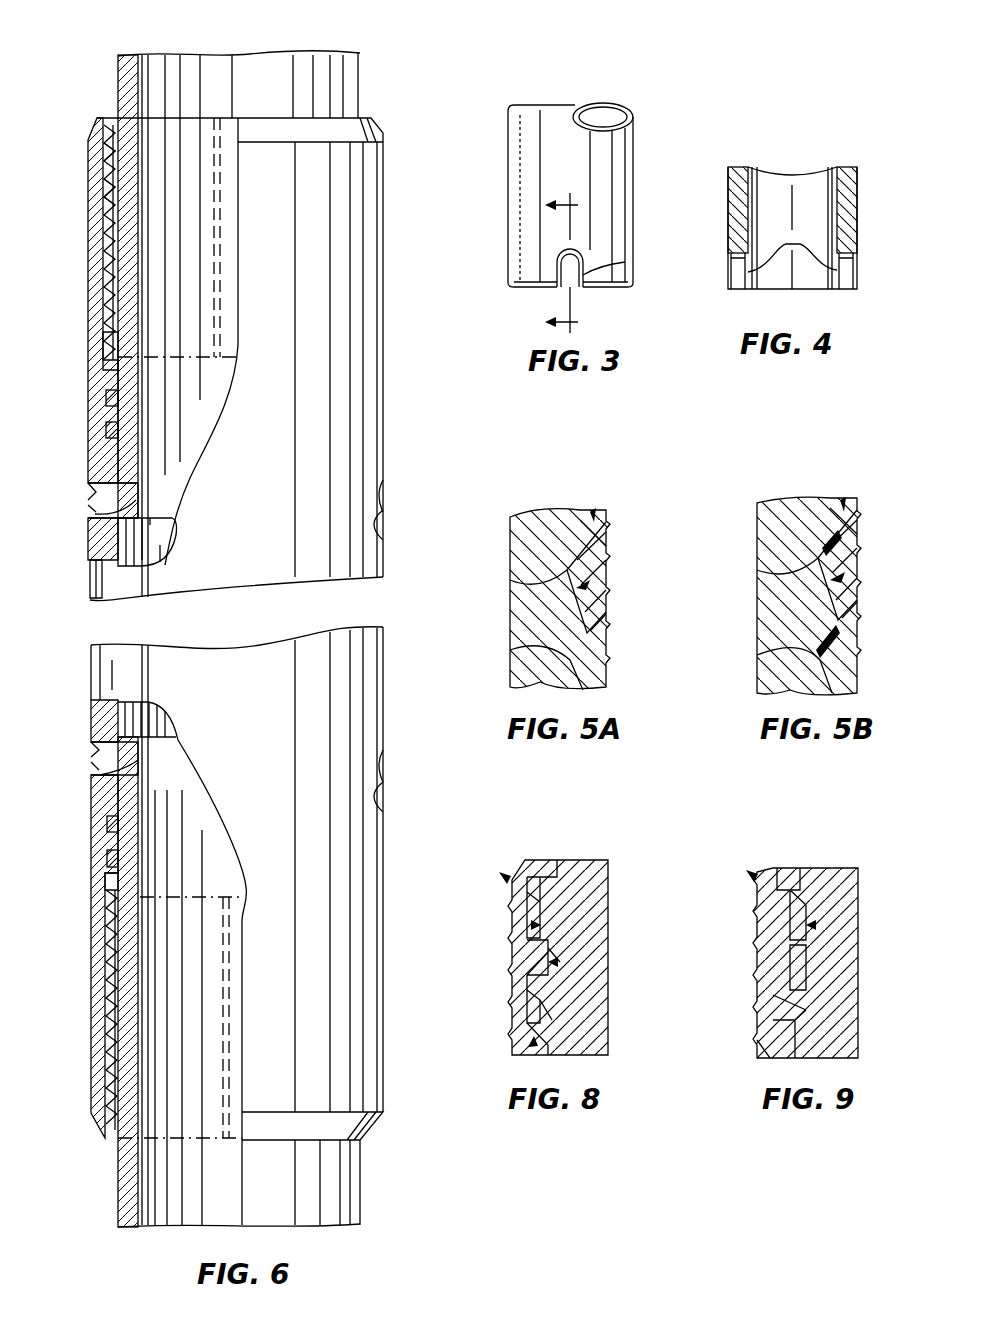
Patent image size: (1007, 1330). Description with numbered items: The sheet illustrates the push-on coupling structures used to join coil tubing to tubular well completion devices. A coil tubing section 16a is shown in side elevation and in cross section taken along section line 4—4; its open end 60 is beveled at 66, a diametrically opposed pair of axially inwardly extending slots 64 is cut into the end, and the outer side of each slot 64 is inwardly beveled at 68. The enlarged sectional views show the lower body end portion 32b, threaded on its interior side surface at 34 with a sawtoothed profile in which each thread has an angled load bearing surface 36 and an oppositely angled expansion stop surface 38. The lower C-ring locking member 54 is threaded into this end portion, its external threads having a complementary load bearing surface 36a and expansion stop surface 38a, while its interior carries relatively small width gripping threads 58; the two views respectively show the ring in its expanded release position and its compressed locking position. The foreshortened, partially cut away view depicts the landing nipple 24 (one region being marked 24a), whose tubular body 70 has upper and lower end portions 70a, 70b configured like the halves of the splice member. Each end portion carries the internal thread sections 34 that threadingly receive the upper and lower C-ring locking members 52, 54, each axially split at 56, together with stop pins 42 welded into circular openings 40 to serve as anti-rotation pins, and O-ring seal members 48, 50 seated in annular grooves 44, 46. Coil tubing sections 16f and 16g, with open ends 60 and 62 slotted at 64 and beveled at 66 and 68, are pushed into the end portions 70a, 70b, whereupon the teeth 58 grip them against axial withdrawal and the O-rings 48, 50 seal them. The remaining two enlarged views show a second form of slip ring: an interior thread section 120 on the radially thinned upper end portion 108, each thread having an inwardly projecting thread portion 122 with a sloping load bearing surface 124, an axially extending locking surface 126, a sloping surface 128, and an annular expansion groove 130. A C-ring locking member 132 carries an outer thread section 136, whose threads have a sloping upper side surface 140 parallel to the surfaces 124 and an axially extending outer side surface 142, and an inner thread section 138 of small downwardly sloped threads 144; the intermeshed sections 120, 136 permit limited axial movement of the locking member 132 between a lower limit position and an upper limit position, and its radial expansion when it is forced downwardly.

In FIG. 3, the section line 4— 4 is at (566, 266).
In FIG. 3, the coil tubing section 16a is at (508, 175).
In FIG. 4, the coil tubing section 16a is at (728, 190).
In FIG. 6, the coil tubing section 16f is at (118, 88).
In FIG. 6, the coil tubing section 16g is at (125, 1185).
In FIG. 6, the landing nipple 24 is at (397, 307).
In FIG. 6, the housing inner surface 24a is at (92, 1072).
In FIG. 5A, the lower body end portion 32b is at (535, 612).
In FIG. 5B, the lower body end portion 32b is at (790, 606).
In FIG. 6, the threaded section 34 is at (106, 151).
In FIG. 5A, the threaded section 34 is at (600, 582).
In FIG. 5B, the threaded section 34 is at (853, 578).
In FIG. 5A, the load bearing surface 36 is at (590, 618).
In FIG. 5B, the load bearing surface 36 is at (842, 618).
In FIG. 5A, the load bearing surface 36a is at (540, 582).
In FIG. 5B, the load bearing surface 36a is at (790, 575).
In FIG. 5A, the expansion stop surface 38 is at (600, 665).
In FIG. 5B, the expansion stop surface 38 is at (852, 667).
In FIG. 5A, the expansion stop surface 38a is at (545, 648).
In FIG. 5B, the expansion stop surface 38a is at (800, 650).
In FIG. 6, the circular openings 40 is at (118, 492).
In FIG. 6, the stop pins 42 is at (128, 500).
In FIG. 6, the annular grooves 44 is at (106, 430).
In FIG. 6, the annular grooves 46 is at (108, 858).
In FIG. 6, the O-ring seal members 48 is at (118, 428).
In FIG. 6, the O-ring seal members 50 is at (120, 858).
In FIG. 6, the upper C-ring locking member 52 is at (166, 110).
In FIG. 6, the lower C-ring locking member 54 is at (108, 962).
In FIG. 5A, the lower C-ring locking member 54 is at (592, 510).
In FIG. 5B, the lower C-ring locking member 54 is at (843, 500).
In FIG. 6, the axial split 56 is at (222, 200).
In FIG. 6, the interior threads 58 is at (107, 196).
In FIG. 5A, the interior threads 58 is at (606, 532).
In FIG. 5B, the interior threads 58 is at (858, 527).
In FIG. 6, the open end 60 is at (178, 530).
In FIG. 3, the open end 60 is at (520, 287).
In FIG. 4, the open end 60 is at (760, 289).
In FIG. 6, the open end 62 is at (162, 708).
In FIG. 6, the slots 64 is at (149, 541).
In FIG. 3, the slots 64 is at (568, 262).
In FIG. 4, the slots 64 is at (790, 242).
In FIG. 6, the bevel 66 is at (122, 483).
In FIG. 3, the bevel 66 is at (612, 287).
In FIG. 4, the bevel 66 is at (845, 289).
In FIG. 3, the bevel 68 is at (590, 272).
In FIG. 4, the bevel 68 is at (850, 262).
In FIG. 6, the tubular body 70 is at (93, 580).
In FIG. 6, the upper end portion 70a is at (92, 230).
In FIG. 6, the lower end portion 70b is at (92, 985).
In FIG. 8, the upper end portion 108 is at (590, 880).
In FIG. 9, the upper end portion 108 is at (840, 912).
In FIG. 8, the thread section 120 is at (532, 925).
In FIG. 9, the thread section 120 is at (790, 968).
In FIG. 8, the thread portion 122 is at (541, 860).
In FIG. 9, the thread portion 122 is at (790, 868).
In FIG. 8, the load bearing surface 124 is at (528, 895).
In FIG. 9, the load bearing surface 124 is at (790, 905).
In FIG. 8, the locking surface 126 is at (530, 950).
In FIG. 9, the locking surface 126 is at (792, 945).
In FIG. 8, the sloping surface 128 is at (530, 978).
In FIG. 8, the expansion groove 130 is at (548, 955).
In FIG. 8, the C-ring locking member 132 is at (532, 1042).
In FIG. 9, the C-ring locking member 132 is at (770, 1045).
In FIG. 8, the thread section 136 is at (556, 962).
In FIG. 9, the thread section 136 is at (814, 925).
In FIG. 8, the thread section 138 is at (506, 878).
In FIG. 9, the thread section 138 is at (752, 876).
In FIG. 8, the upper side surface 140 is at (548, 925).
In FIG. 9, the upper side surface 140 is at (800, 1000).
In FIG. 8, the outer side surface 142 is at (590, 1030).
In FIG. 9, the outer side surface 142 is at (805, 1020).
In FIG. 8, the threads 144 is at (512, 1038).
In FIG. 9, the threads 144 is at (757, 1030).